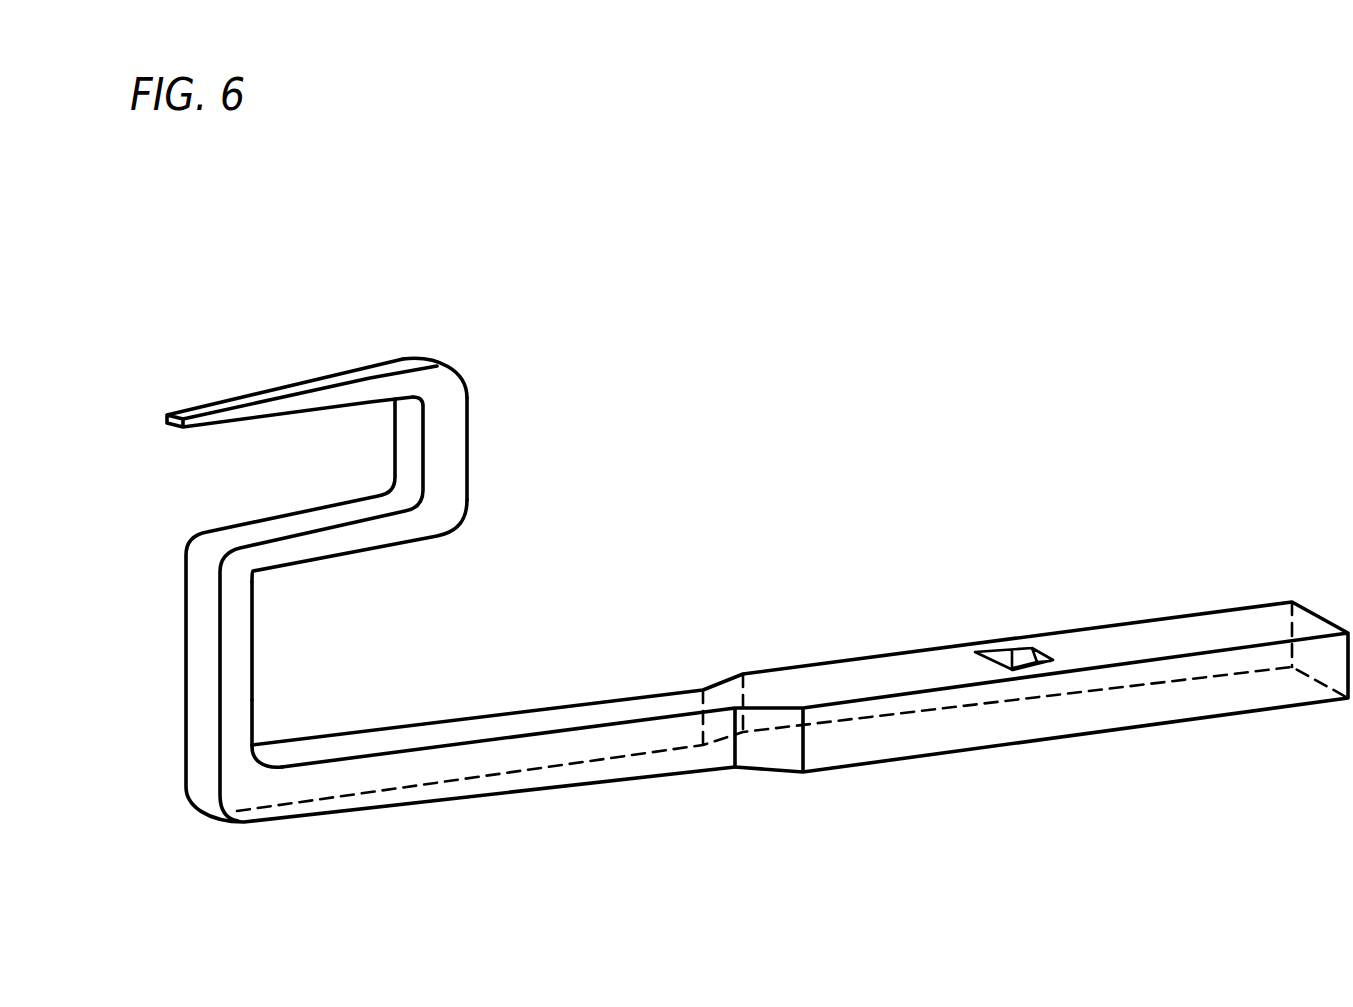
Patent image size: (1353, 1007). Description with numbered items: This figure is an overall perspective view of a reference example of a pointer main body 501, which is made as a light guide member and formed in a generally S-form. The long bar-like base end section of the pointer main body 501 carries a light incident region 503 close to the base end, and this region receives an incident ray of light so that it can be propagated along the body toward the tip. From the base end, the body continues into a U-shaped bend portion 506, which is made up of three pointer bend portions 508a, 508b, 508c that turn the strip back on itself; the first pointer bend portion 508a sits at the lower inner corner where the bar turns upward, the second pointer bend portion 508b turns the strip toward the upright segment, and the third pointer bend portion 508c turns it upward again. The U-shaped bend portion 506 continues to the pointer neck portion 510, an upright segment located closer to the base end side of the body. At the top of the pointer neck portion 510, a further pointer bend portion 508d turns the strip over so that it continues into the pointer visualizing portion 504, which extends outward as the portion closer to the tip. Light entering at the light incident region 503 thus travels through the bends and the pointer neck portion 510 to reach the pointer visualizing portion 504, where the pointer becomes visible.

The pointer main body 501 is at (792, 577).
The light incident region 503 is at (1028, 628).
The pointer visualizing portion 504 is at (332, 385).
The U-shaped bend portion 506 is at (391, 552).
The pointer bend portion 508a is at (255, 779).
The pointer bend portion 508b is at (245, 563).
The pointer bend portion 508c is at (440, 512).
The pointer bend portion 508d is at (450, 392).
The pointer neck portion 510 is at (448, 438).